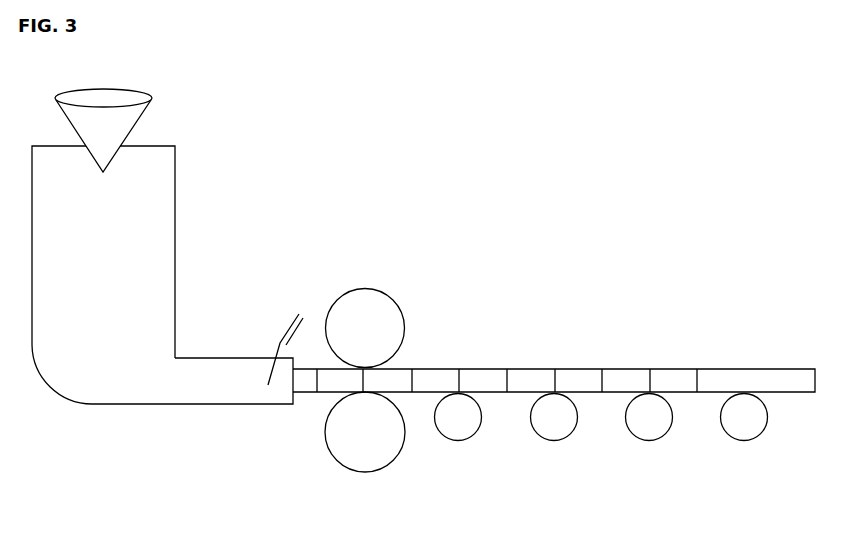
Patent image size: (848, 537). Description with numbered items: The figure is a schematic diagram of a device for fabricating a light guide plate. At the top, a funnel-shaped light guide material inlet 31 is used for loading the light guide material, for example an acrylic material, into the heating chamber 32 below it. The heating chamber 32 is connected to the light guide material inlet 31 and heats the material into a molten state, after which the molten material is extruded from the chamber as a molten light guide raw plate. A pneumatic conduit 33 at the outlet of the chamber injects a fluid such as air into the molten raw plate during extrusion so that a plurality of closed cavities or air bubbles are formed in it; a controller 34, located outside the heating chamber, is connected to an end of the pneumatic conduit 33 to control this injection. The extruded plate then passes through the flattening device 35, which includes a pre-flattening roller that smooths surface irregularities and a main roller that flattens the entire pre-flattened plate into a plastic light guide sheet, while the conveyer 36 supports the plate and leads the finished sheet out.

The light guide material inlet 31 is at (152, 99).
The heating chamber 32 is at (175, 235).
The pneumatic conduit 33 is at (268, 373).
The controller 34 is at (282, 337).
The flattening device 35 is at (403, 433).
The conveyer 36 is at (457, 437).